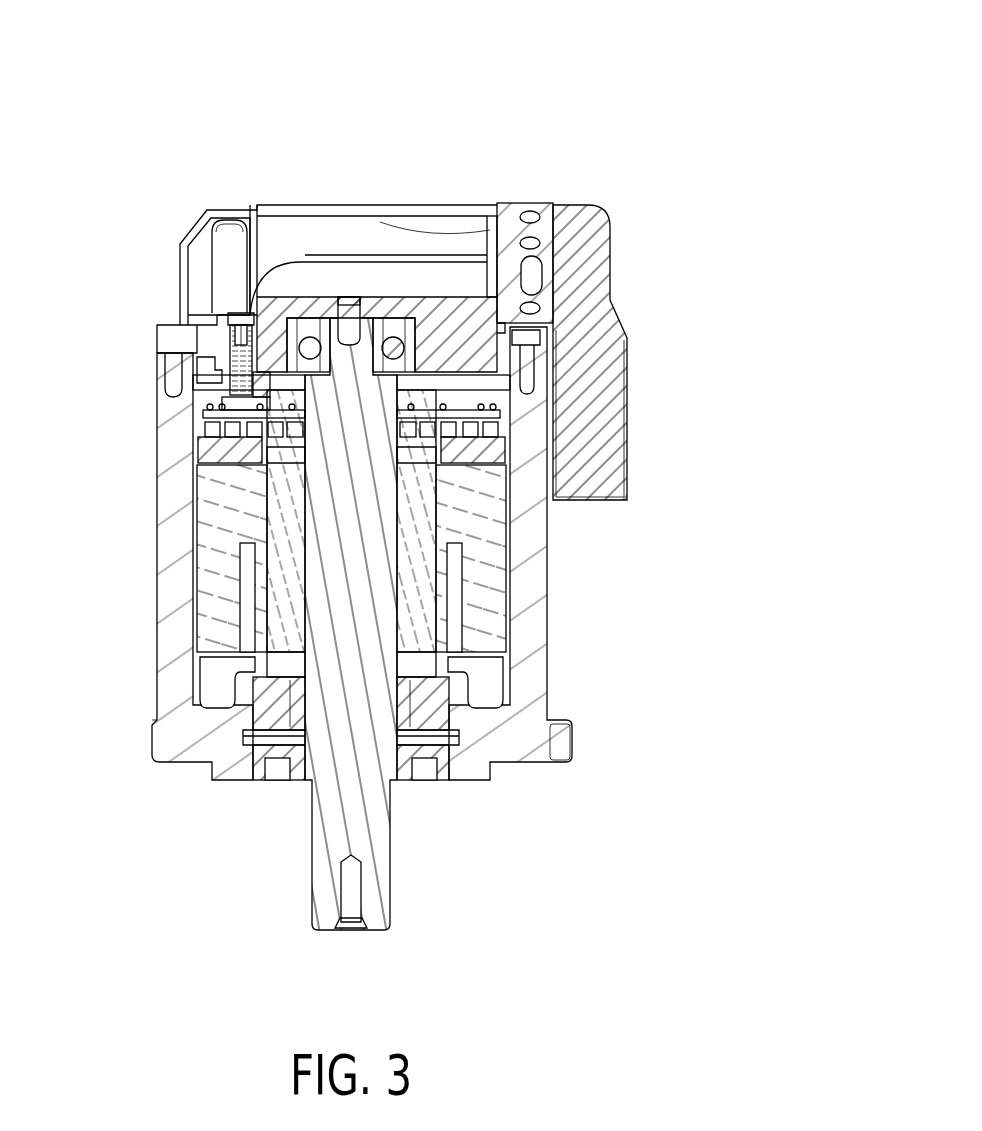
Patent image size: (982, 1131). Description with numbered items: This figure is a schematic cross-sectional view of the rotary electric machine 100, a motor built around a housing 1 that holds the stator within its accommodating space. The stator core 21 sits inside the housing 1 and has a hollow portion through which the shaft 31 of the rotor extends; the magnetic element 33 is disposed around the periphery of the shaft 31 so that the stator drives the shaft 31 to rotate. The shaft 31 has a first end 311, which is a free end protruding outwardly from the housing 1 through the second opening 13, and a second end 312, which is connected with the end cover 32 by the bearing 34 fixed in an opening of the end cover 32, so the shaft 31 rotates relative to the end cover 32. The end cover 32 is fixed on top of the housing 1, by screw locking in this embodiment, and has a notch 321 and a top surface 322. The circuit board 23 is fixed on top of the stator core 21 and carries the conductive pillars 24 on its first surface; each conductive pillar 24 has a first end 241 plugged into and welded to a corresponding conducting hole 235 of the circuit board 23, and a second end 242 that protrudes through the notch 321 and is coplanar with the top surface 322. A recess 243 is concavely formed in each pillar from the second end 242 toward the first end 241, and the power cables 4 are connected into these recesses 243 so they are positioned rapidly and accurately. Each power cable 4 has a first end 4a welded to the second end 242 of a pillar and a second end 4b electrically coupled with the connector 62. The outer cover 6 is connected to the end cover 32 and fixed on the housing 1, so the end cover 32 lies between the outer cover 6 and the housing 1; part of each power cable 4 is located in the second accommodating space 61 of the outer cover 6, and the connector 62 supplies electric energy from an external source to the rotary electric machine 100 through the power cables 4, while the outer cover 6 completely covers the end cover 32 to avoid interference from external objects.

The rotary electric machine 100 is at (685, 30).
The housing 1 is at (172, 710).
The second opening 13 is at (448, 783).
The stator core 21 is at (225, 578).
The circuit board 23 is at (294, 443).
The conducting holes 235 is at (210, 455).
The conductive pillars 24 is at (193, 373).
The first end 241 is at (205, 493).
The second end 242 is at (240, 318).
The recess 243 is at (186, 329).
The shaft 31 is at (404, 556).
The first end 311 is at (352, 918).
The second end 312 is at (383, 265).
The end cover 32 is at (553, 347).
The notch 321 is at (157, 325).
The top surface 322 is at (236, 208).
The magnetic element 33 is at (420, 573).
The bearing 34 is at (378, 295).
The power cables 4 is at (576, 312).
The first end 4a is at (237, 320).
The second end 4b is at (587, 210).
The outer cover 6 is at (520, 210).
The second accommodating space 61 is at (338, 208).
The connector 62 is at (592, 448).